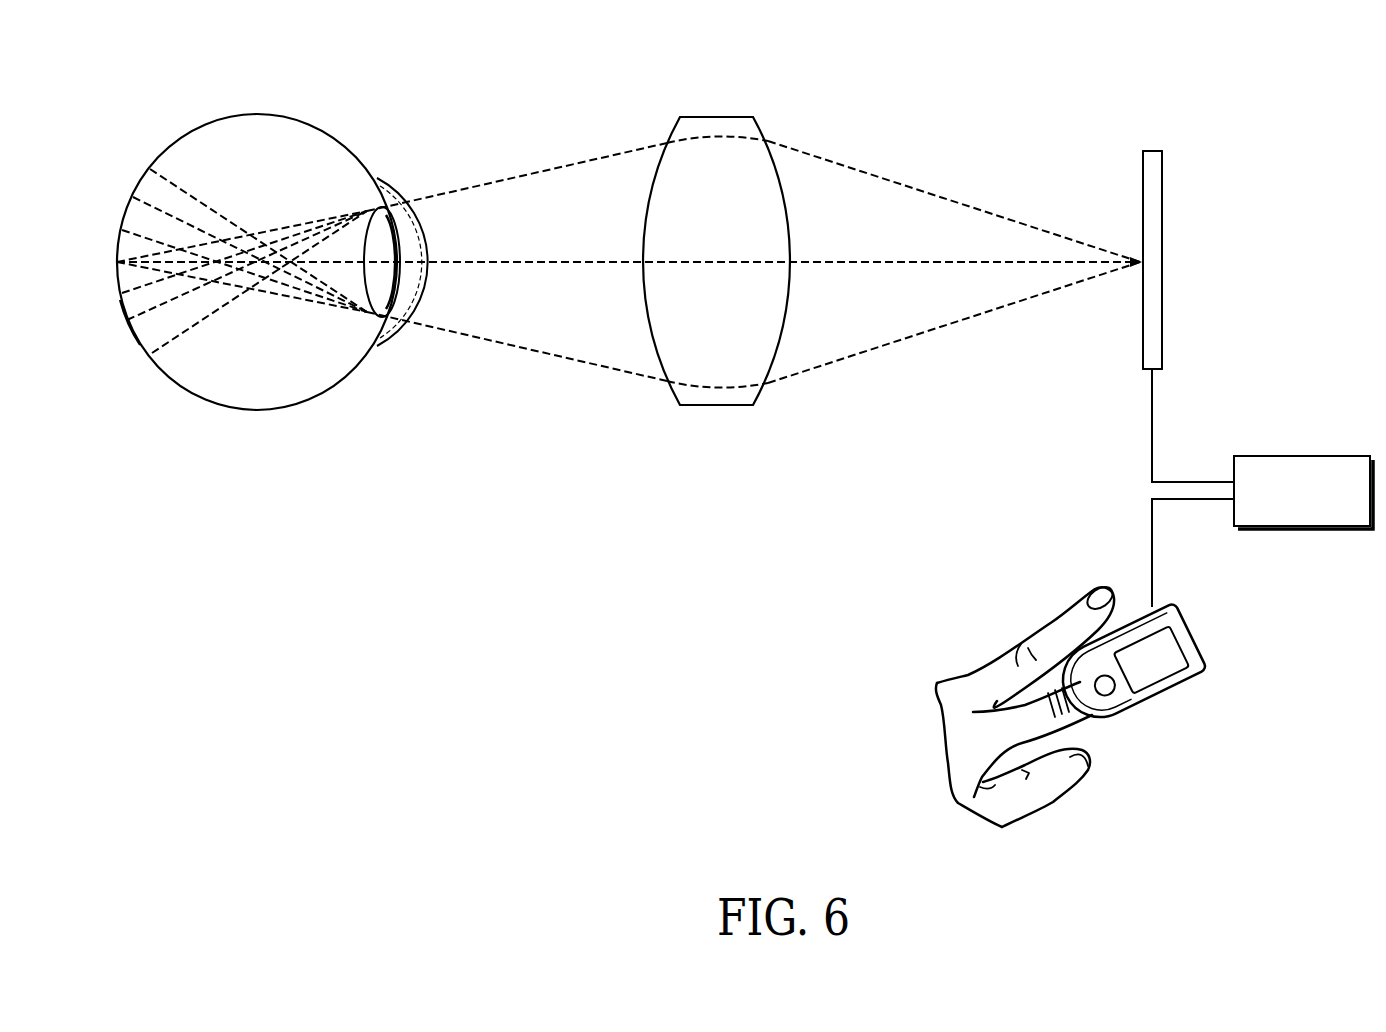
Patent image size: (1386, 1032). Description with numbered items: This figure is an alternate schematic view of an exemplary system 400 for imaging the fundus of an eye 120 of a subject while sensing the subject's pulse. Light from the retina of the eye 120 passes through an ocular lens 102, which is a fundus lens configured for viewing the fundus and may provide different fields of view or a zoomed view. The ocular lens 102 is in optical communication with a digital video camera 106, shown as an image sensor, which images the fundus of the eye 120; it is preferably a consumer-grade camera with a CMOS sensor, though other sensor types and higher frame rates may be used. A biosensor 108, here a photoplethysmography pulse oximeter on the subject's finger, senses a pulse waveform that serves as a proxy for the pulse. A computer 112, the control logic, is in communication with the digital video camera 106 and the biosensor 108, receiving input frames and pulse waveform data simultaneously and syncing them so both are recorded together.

The exemplary system 400 is at (221, 78).
The eye 120 is at (125, 303).
The ocular lens 102 is at (743, 132).
The digital video camera 106 is at (1163, 167).
The computer 112 is at (1304, 454).
The biosensor 108 is at (1208, 656).